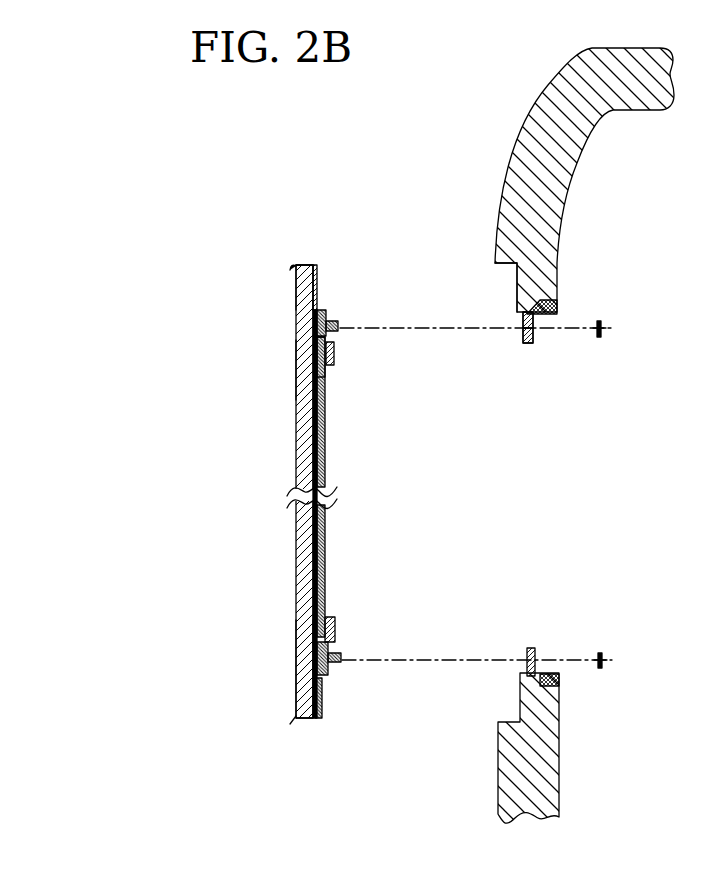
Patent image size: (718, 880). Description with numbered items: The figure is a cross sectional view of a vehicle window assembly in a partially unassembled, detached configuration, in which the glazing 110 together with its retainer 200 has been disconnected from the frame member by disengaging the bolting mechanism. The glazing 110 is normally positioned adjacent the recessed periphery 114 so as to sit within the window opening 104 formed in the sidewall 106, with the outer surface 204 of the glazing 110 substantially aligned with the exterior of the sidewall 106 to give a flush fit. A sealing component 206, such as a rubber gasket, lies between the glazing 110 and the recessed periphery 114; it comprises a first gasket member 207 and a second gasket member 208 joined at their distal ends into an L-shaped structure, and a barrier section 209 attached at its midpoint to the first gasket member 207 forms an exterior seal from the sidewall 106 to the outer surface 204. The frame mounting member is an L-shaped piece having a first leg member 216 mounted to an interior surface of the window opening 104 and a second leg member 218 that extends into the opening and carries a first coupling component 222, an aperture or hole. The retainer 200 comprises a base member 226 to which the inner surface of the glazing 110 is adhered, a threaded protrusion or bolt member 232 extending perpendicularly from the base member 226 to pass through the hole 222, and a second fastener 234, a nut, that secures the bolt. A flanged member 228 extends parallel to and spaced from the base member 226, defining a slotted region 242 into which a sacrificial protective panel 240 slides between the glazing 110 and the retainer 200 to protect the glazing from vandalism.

The window opening 104 is at (602, 437).
The sidewall 106 is at (519, 134).
The glazing 110 is at (300, 404).
The recessed periphery 114 is at (498, 282).
The retainer 200 is at (334, 348).
The outer surface 204 is at (296, 455).
The sealing component 206 is at (296, 290).
The first gasket member 207 is at (313, 262).
The second gasket member 208 is at (318, 276).
The barrier section 209 is at (292, 265).
The first leg member 216 is at (560, 312).
The second leg member 218 is at (531, 343).
The first coupling component 222 is at (525, 336).
The base member 226 is at (332, 312).
The flanged member 228 is at (330, 370).
The protrusion or bolt member 232 is at (340, 326).
The second fastener 234 is at (602, 324).
The sacrificial protective panel 240 is at (325, 462).
The slotted region 242 is at (305, 358).